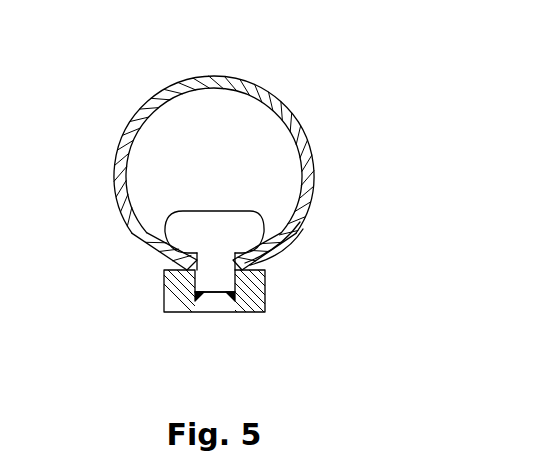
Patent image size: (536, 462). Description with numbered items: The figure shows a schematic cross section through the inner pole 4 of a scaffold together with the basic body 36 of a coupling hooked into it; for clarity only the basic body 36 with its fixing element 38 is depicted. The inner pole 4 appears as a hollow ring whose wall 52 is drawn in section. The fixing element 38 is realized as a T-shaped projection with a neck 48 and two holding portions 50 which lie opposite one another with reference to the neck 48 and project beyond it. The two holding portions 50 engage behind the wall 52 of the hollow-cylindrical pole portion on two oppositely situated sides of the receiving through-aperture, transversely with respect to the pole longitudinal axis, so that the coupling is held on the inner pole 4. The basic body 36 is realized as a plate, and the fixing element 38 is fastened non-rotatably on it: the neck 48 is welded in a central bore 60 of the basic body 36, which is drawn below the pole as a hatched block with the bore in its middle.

The inner pole 4 is at (296, 93).
The basic body 36 is at (258, 302).
The fixing element 38 is at (210, 252).
The neck 48 is at (283, 260).
The holding portions 50 is at (183, 229).
The wall 52 is at (170, 253).
The central bore 60 is at (215, 300).